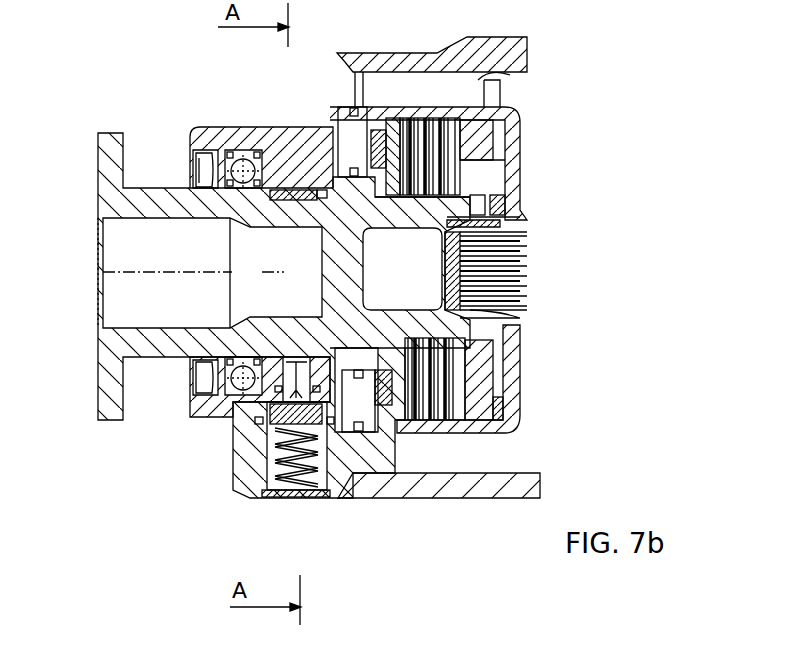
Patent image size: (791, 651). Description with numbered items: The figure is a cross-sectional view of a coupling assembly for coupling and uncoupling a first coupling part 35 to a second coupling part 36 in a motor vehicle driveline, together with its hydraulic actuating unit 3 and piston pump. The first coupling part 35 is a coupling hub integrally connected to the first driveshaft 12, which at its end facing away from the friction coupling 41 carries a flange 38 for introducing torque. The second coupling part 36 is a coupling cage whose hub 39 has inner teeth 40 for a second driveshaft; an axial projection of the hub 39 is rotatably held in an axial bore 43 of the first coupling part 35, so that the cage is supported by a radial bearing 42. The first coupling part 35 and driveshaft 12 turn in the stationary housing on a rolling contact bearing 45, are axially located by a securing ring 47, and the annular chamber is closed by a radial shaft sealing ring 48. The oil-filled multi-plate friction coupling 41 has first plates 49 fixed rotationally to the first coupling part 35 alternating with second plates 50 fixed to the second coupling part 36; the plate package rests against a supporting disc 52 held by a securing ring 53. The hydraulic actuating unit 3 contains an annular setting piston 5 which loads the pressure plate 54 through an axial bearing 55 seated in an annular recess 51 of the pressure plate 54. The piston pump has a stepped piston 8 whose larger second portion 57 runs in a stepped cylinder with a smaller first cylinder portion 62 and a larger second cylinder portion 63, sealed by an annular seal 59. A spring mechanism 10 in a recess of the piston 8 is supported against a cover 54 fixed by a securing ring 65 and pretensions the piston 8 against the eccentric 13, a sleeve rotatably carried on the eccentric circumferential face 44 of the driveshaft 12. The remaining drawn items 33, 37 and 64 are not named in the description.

The hydraulic actuating unit 3 is at (337, 105).
The setting piston 5 is at (360, 133).
The piston 8 is at (294, 367).
The spring mechanism 10 is at (302, 470).
The first driveshaft 12 is at (180, 206).
The eccentric 13 is at (328, 186).
The spring housing 33 is at (265, 481).
The first coupling part 35 is at (407, 222).
The second coupling part 36 is at (514, 143).
The lower bearing carrier 37 is at (267, 413).
The flange 38 is at (100, 153).
The hub 39 is at (522, 247).
The inner teeth 40 is at (522, 272).
The friction coupling 41 is at (430, 88).
The radial bearing 42 is at (521, 326).
The axial bore 43 is at (500, 306).
The circumferential face 44 is at (282, 188).
The rolling contact bearing 45 is at (244, 165).
The securing ring 47 is at (207, 150).
The radial shaft sealing ring 48 is at (188, 160).
The first plates 49 is at (428, 120).
The second plates 50 is at (456, 120).
The annular recess 51 is at (383, 212).
The supporting disc 52 is at (521, 383).
The securing ring 53 is at (521, 353).
The pressure plate 54 is at (380, 145).
The axial bearing 55 is at (380, 375).
The second portion 57 is at (353, 450).
The annular seal 59 is at (267, 433).
The first cylinder portion 62 is at (315, 357).
The second cylinder portion 63 is at (267, 462).
The spring plate 64 is at (282, 497).
The securing ring 65 is at (289, 188).